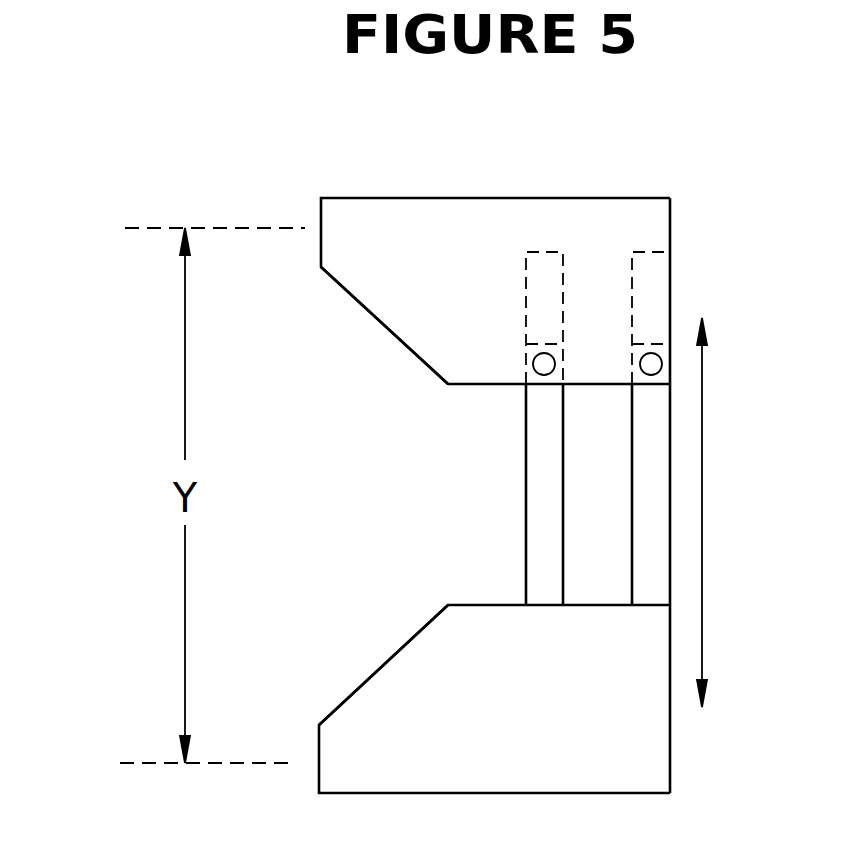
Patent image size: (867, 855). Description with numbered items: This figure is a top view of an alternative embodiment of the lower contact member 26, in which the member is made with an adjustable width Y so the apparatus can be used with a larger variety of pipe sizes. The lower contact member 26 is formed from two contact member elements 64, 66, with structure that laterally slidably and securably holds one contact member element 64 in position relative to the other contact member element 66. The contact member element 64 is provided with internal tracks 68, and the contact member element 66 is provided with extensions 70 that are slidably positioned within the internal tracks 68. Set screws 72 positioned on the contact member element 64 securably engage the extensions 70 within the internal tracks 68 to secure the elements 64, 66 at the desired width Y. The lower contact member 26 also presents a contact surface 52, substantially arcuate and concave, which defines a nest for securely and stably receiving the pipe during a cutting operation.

The lower contact member 26 is at (473, 236).
The contact member element 66 is at (625, 232).
The internal tracks 68 is at (543, 320).
The set screws 72 is at (597, 341).
The extensions 70 is at (548, 434).
The contact surface 52 is at (420, 357).
The contact member element 64 is at (598, 748).